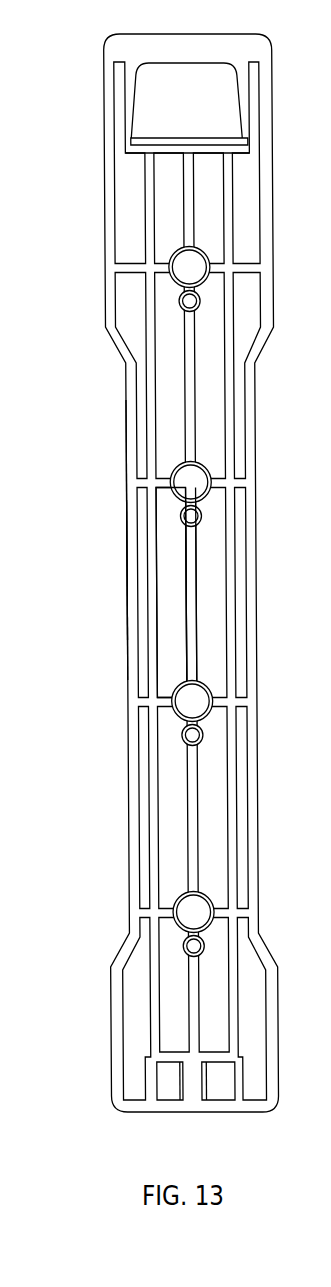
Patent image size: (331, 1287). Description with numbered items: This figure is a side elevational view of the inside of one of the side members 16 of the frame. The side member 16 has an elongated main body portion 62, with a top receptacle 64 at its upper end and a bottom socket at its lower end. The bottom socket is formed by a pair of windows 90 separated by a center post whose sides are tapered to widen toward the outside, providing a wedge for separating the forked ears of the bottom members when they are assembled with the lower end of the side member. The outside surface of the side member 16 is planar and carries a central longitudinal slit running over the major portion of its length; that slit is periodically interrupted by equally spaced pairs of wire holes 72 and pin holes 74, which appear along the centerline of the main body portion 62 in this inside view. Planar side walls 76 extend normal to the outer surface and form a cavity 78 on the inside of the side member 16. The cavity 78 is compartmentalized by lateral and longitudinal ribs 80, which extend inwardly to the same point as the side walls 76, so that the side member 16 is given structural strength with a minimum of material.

The side member 16 is at (116, 432).
The elongated main body portion 62 is at (127, 522).
The top receptacle 64 is at (187, 105).
The wire holes 72 is at (193, 736).
The pin holes 74 is at (193, 703).
The side walls 76 is at (127, 593).
The cavity 78 is at (172, 617).
The lateral and longitudinal ribs 80 is at (185, 652).
The windows 90 is at (167, 1080).